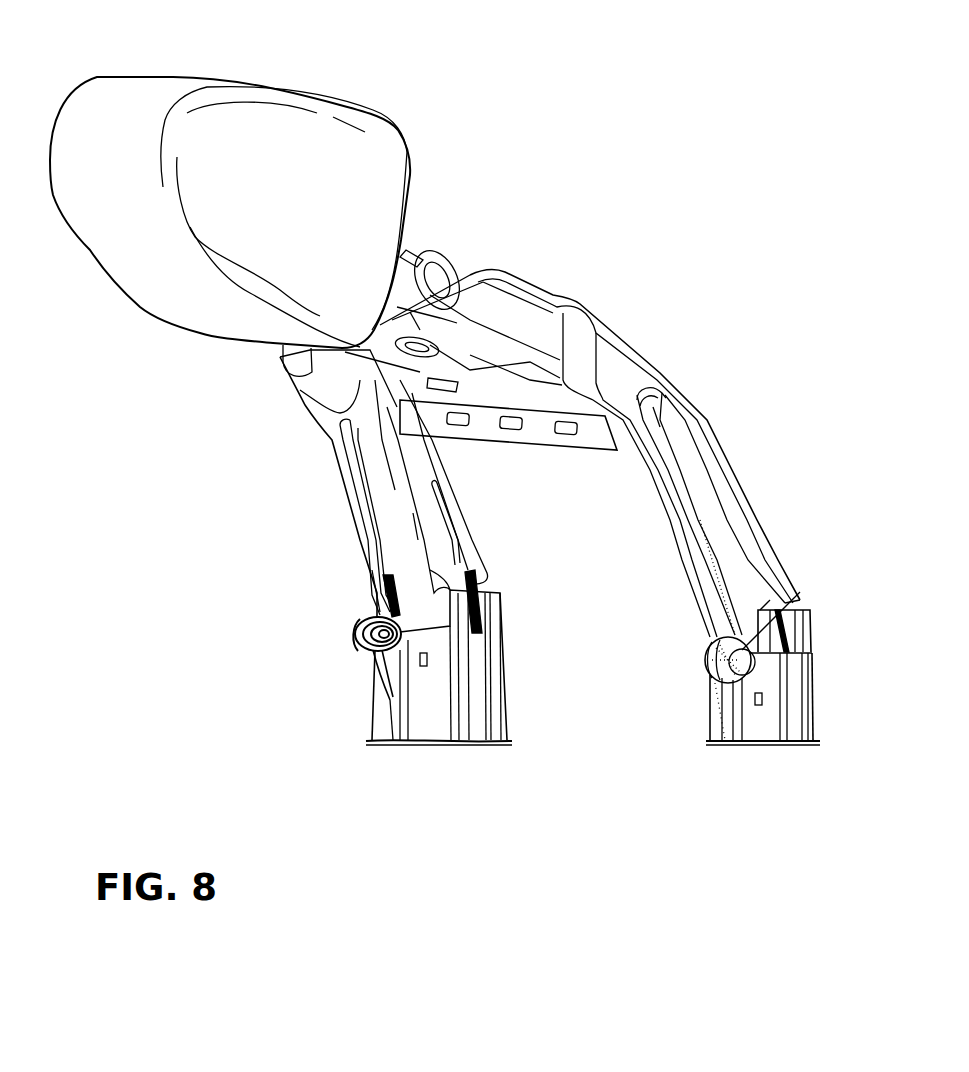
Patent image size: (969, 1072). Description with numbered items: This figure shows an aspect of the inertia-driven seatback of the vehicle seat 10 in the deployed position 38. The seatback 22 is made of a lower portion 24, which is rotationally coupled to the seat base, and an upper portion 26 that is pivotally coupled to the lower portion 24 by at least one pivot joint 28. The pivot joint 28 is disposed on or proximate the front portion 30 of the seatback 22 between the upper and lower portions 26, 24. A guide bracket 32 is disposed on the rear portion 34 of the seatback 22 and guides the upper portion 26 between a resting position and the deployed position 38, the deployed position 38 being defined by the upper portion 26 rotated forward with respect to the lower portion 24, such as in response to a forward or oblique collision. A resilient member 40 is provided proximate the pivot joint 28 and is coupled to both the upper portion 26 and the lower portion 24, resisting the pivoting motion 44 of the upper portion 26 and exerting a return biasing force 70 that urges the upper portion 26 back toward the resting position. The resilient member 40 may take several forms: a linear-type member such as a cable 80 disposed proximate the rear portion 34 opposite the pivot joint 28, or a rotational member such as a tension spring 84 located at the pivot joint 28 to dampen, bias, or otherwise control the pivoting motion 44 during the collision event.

The vehicle seat 10 is at (228, 578).
The seatback 22 is at (737, 402).
The lower portion 24 is at (790, 703).
The upper portion 26 is at (603, 357).
The pivot joint 28 is at (717, 683).
The front portion 30 is at (334, 630).
The guide bracket 32 is at (797, 632).
The rear portion 34 is at (804, 591).
The deployed position 38 is at (305, 499).
The resilient member 40 is at (379, 592).
The pivoting motion 44 is at (408, 76).
The return biasing force 70 is at (522, 512).
The cable 80 is at (473, 581).
The tension spring 84 is at (378, 663).